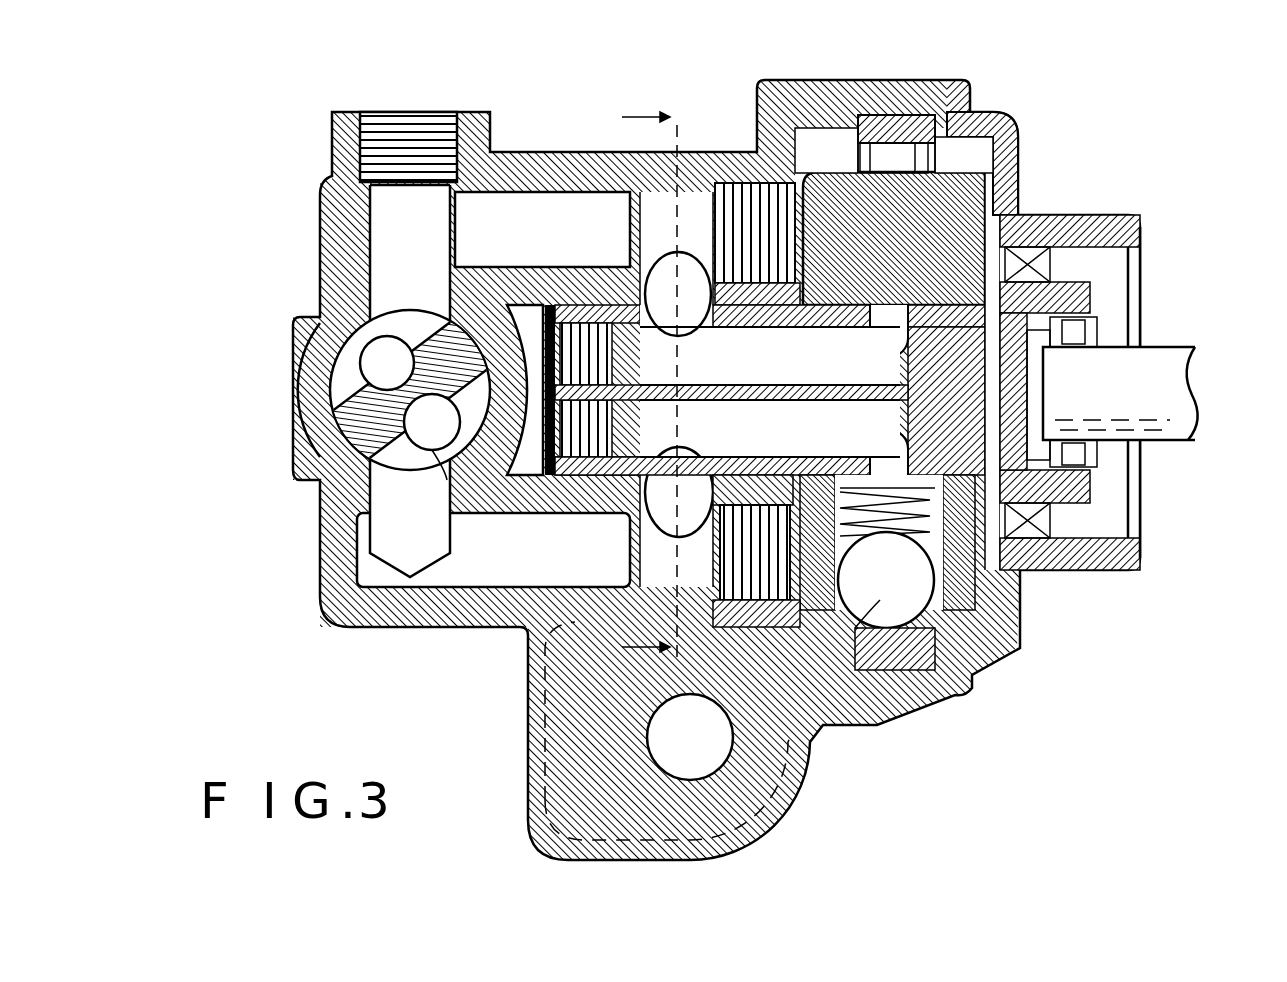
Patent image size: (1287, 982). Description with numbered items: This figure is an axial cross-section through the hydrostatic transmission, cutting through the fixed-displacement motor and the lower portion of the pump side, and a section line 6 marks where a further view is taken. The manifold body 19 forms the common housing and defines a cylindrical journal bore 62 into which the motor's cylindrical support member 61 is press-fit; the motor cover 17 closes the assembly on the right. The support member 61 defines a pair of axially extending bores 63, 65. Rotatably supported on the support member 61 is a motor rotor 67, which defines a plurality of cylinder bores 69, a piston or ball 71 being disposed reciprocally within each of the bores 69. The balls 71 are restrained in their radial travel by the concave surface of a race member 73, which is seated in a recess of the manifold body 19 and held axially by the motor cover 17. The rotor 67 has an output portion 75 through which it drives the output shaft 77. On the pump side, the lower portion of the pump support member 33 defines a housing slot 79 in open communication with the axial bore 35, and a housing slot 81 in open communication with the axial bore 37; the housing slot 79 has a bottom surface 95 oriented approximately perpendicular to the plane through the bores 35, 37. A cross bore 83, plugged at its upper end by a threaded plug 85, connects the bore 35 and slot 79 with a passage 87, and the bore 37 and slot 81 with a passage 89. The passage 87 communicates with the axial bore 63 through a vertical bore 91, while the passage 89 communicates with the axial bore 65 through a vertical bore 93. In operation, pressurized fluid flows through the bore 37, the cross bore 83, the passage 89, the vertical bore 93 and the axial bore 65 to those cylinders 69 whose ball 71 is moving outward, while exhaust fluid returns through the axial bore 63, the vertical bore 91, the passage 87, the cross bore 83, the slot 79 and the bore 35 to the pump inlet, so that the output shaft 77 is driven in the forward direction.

The motor cover 17 is at (1055, 562).
The manifold body 19 is at (798, 95).
The pump support member 33 is at (355, 440).
The axial bore 35 is at (375, 356).
The axial bore 37 is at (452, 442).
The cylindrical support member 61 is at (818, 318).
The cylindrical journal bore 62 is at (627, 320).
The axial bore 63 is at (770, 356).
The axial bore 65 is at (770, 428).
The motor rotor 67 is at (968, 190).
The cylinder bores 69 is at (935, 605).
The piston or ball 71 is at (858, 612).
The race member 73 is at (915, 130).
The output portion 75 is at (1080, 300).
The output shaft 77 is at (1185, 363).
The housing slot 79 is at (343, 390).
The housing slot 81 is at (440, 465).
The cross bore 83 is at (380, 232).
The threaded plug 85 is at (427, 123).
The passage 87 is at (542, 229).
The passage 89 is at (493, 550).
The vertical bore 91 is at (660, 308).
The vertical bore 93 is at (690, 473).
The bottom surface 95 is at (423, 340).
The section line 6- 6 is at (656, 385).